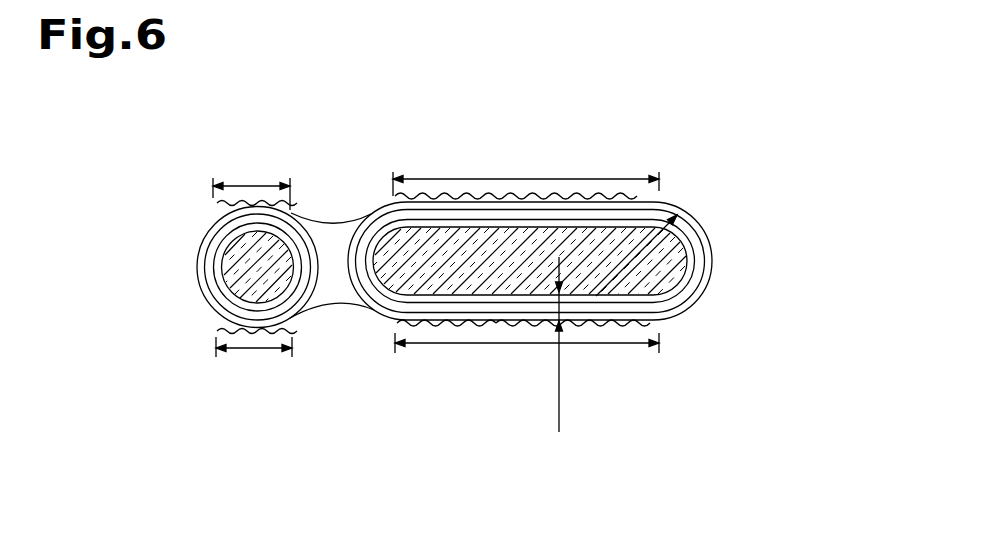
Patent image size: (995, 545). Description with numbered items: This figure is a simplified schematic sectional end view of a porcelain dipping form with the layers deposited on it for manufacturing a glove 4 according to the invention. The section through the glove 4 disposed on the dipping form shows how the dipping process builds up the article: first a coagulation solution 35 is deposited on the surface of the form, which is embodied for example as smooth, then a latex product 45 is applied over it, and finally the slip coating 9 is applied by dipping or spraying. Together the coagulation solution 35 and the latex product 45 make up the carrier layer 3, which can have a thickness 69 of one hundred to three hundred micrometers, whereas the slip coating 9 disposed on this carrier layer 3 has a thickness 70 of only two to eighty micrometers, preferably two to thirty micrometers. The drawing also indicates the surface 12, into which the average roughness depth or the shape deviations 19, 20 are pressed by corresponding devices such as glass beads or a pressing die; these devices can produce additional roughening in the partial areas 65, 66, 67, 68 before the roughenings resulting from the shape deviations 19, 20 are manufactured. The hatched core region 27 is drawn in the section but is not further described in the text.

The carrier layer 3 is at (485, 298).
The glove 4 is at (598, 173).
The slip coating 9 is at (296, 211).
The surface 12 is at (600, 325).
The shape deviation 19 is at (443, 328).
The shape deviation 20 is at (633, 328).
The conductor 27 is at (668, 250).
The coagulation solution 35 is at (682, 284).
The latex product 45 is at (697, 272).
The partial area 65 is at (420, 344).
The partial area 66 is at (255, 350).
The partial area 67 is at (437, 180).
The partial area 68 is at (250, 186).
The thickness 69 is at (546, 359).
The thickness 70 is at (691, 198).